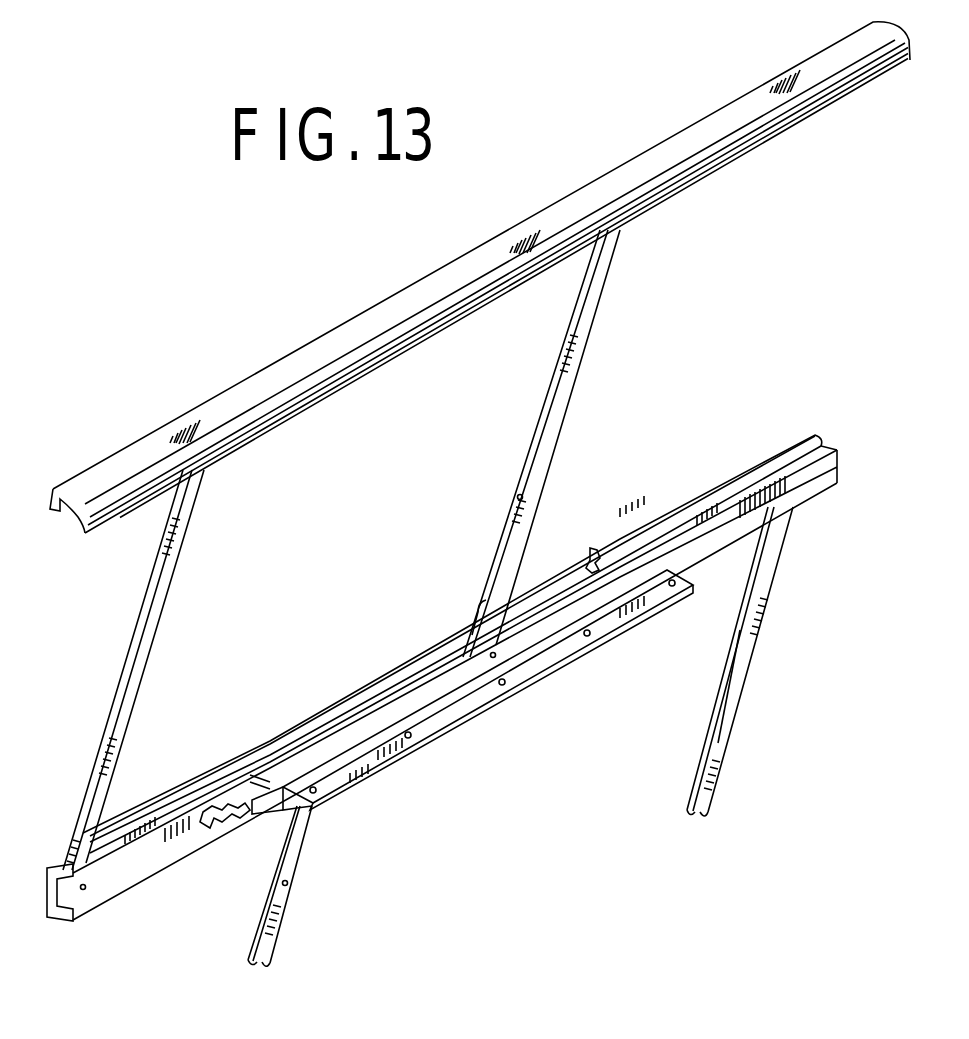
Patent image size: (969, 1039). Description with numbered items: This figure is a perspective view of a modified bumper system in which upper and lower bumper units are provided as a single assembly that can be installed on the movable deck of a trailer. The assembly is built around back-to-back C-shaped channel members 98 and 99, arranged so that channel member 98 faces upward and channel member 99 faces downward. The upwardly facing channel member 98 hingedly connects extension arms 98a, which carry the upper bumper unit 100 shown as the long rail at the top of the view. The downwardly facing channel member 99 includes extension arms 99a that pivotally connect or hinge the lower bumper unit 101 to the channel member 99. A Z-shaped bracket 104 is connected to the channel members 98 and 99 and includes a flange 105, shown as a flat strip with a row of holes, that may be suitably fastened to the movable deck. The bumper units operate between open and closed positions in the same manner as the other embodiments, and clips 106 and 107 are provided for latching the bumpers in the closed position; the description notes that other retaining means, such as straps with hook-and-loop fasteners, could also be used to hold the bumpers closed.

The upper bumper unit 100 is at (548, 207).
The upwardly facing C-shaped channel member 98 is at (98, 877).
The extension arms 98a is at (148, 638).
The downwardly facing C-shaped channel member 99 is at (153, 869).
The extension arms 99a is at (718, 743).
The lower bumper unit 101 is at (742, 713).
The Z-shaped bracket 104 is at (360, 770).
The flange 105 is at (467, 706).
The clip 106 is at (591, 548).
The clip 107 is at (207, 822).